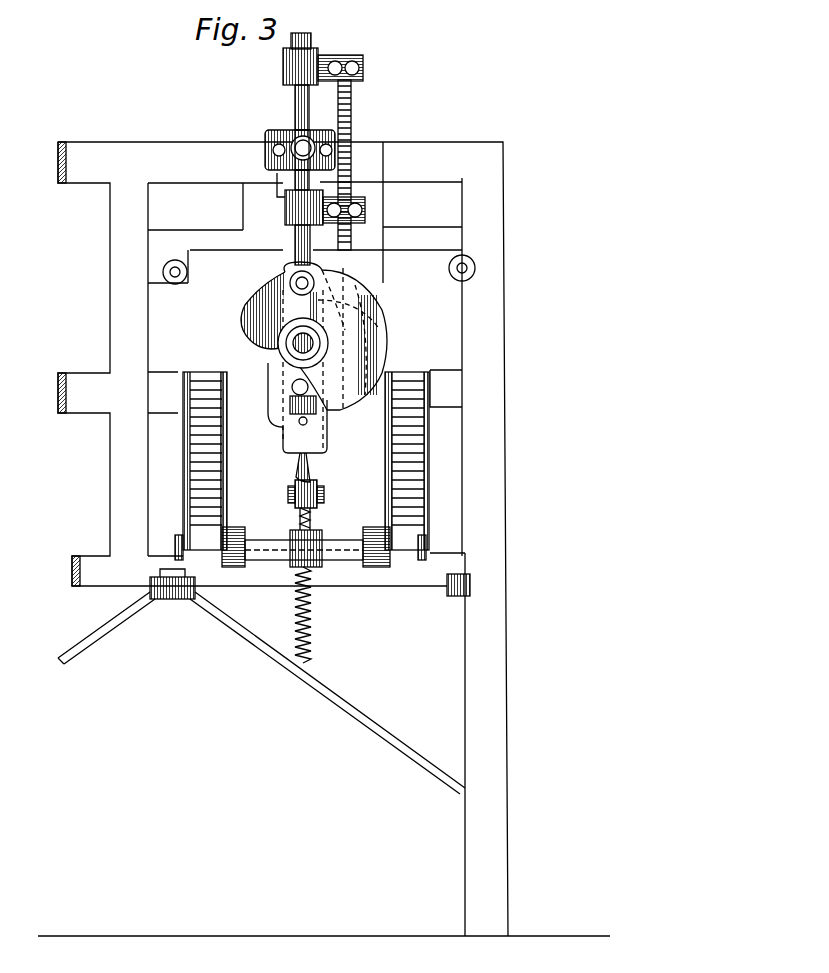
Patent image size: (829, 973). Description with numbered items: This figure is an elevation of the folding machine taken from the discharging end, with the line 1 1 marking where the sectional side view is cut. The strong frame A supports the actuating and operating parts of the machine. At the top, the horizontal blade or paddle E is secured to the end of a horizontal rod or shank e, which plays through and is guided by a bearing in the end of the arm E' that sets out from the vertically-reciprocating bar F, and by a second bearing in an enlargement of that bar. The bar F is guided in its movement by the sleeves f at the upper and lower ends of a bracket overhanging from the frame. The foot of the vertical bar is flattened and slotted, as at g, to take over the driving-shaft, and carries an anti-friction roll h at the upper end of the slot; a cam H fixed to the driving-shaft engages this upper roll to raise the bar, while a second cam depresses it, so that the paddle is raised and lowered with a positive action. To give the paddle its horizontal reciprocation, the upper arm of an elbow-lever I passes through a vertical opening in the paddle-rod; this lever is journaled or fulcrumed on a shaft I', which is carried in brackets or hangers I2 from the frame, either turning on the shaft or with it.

The frame A is at (300, 347).
The horizontal blade or paddle E is at (311, 111).
The arm E' is at (359, 165).
The sleeves f is at (283, 66).
The horizontal rod or shank e is at (268, 146).
The elbow-lever I is at (293, 332).
The vertically-reciprocating bar F is at (295, 244).
The anti-friction roll h is at (290, 286).
The cam H is at (243, 323).
The slot g is at (291, 388).
The brackets or hangers I2 is at (215, 466).
The shaft I' is at (300, 534).
The line 1 1 is at (381, 112).